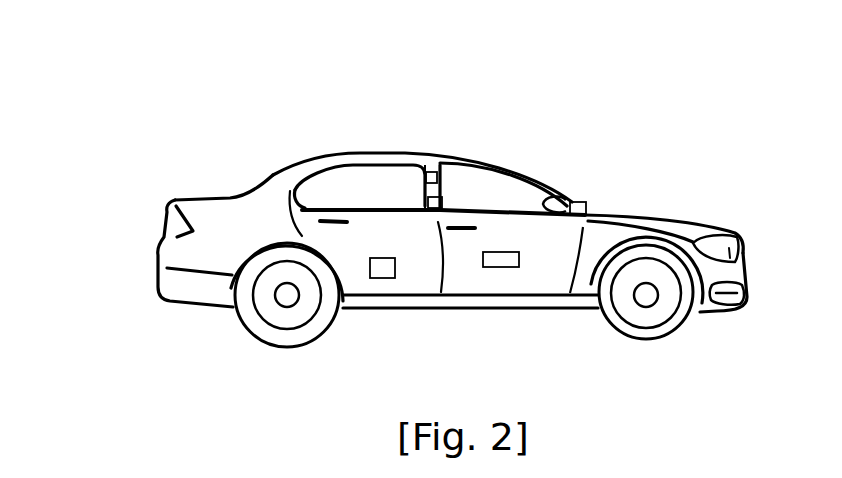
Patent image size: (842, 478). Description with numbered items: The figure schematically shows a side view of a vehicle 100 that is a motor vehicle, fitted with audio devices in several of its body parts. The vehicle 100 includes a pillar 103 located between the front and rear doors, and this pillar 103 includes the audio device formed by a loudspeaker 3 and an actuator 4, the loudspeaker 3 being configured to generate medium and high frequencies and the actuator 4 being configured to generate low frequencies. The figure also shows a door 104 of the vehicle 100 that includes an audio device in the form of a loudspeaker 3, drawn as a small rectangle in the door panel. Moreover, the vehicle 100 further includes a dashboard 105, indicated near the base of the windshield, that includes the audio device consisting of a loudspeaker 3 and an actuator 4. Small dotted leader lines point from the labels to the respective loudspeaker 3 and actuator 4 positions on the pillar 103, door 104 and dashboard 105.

The vehicle 100 is at (193, 125).
The pillar 103 is at (425, 177).
The door 104 is at (540, 272).
The dashboard 105 is at (571, 201).
The loudspeaker 3 is at (432, 172).
The actuator 4 is at (445, 209).